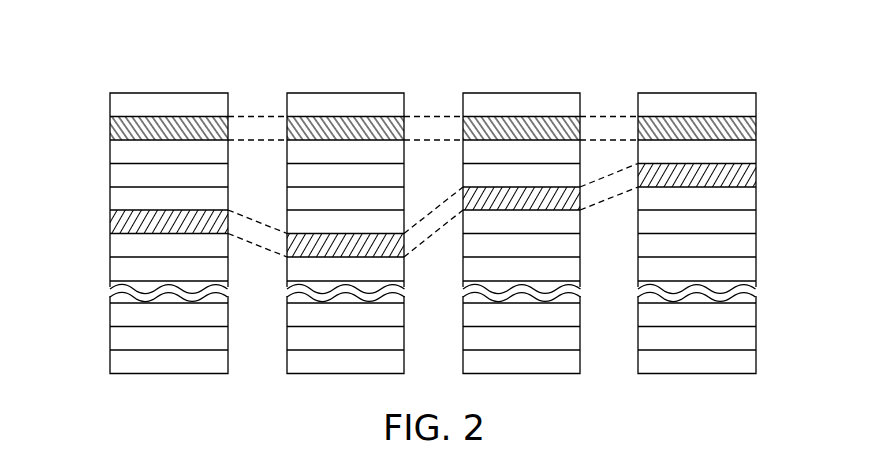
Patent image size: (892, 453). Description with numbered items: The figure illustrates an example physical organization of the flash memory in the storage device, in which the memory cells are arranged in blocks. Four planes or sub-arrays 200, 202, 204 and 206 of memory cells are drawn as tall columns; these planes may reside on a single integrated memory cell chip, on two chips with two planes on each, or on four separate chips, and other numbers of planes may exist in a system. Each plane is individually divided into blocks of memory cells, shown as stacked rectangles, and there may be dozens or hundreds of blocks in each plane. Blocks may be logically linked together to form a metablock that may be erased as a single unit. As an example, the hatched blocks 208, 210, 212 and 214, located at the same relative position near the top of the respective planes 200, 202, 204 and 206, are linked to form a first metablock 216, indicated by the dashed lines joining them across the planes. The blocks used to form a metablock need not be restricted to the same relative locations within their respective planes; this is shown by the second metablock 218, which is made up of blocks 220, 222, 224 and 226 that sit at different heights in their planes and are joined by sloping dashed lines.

The plane 200 is at (173, 79).
The plane 202 is at (351, 79).
The plane 204 is at (515, 79).
The plane 206 is at (737, 83).
The block 208 is at (148, 129).
The block 210 is at (326, 128).
The block 212 is at (502, 128).
The block 214 is at (722, 127).
The first metablock 216 is at (606, 104).
The second metablock 218 is at (616, 162).
The block 220 is at (148, 222).
The block 222 is at (322, 243).
The block 224 is at (508, 197).
The block 226 is at (723, 172).